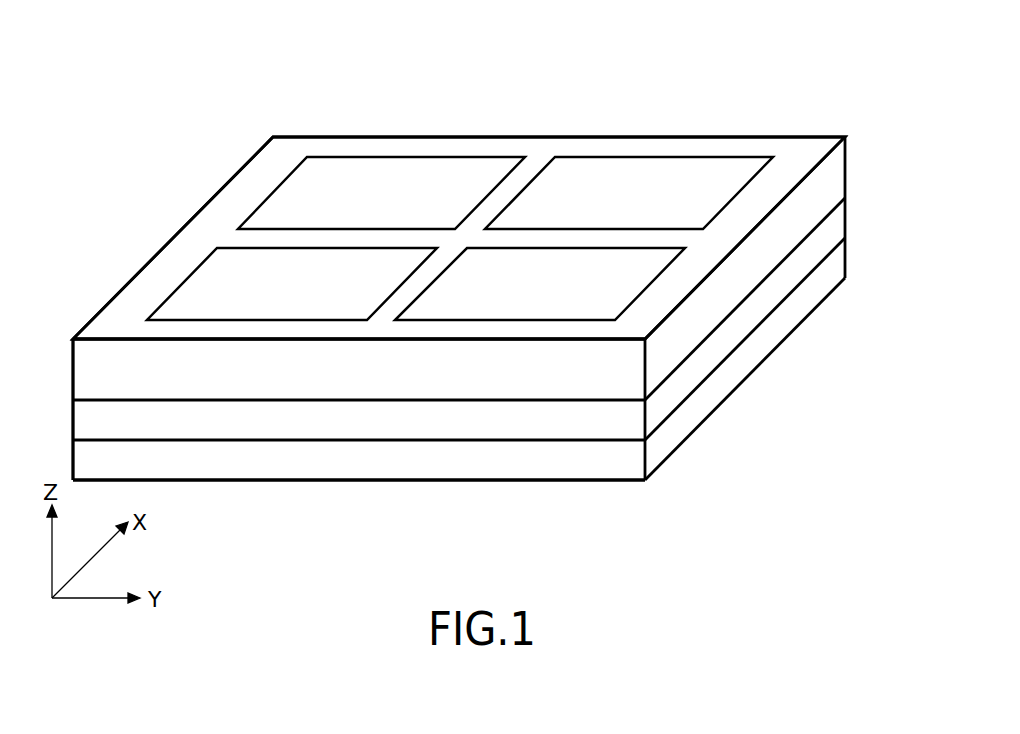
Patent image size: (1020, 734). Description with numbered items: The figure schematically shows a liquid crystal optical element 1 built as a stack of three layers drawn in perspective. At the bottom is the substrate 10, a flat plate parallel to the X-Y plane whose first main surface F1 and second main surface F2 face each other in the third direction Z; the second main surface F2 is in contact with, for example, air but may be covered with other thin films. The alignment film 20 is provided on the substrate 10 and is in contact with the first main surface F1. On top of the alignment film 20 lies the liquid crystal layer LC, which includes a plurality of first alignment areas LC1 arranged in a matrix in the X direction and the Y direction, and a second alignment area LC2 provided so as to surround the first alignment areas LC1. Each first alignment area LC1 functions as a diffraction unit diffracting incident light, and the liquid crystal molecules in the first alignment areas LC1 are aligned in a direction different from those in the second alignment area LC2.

The liquid crystal optical element 1 is at (488, 290).
The substrate 10 is at (845, 262).
The alignment film 20 is at (845, 222).
The liquid crystal layer LC is at (845, 177).
The first alignment areas LC1 is at (283, 260).
The second alignment area LC2 is at (791, 154).
The first main surface F1 is at (541, 430).
The second main surface F2 is at (616, 489).